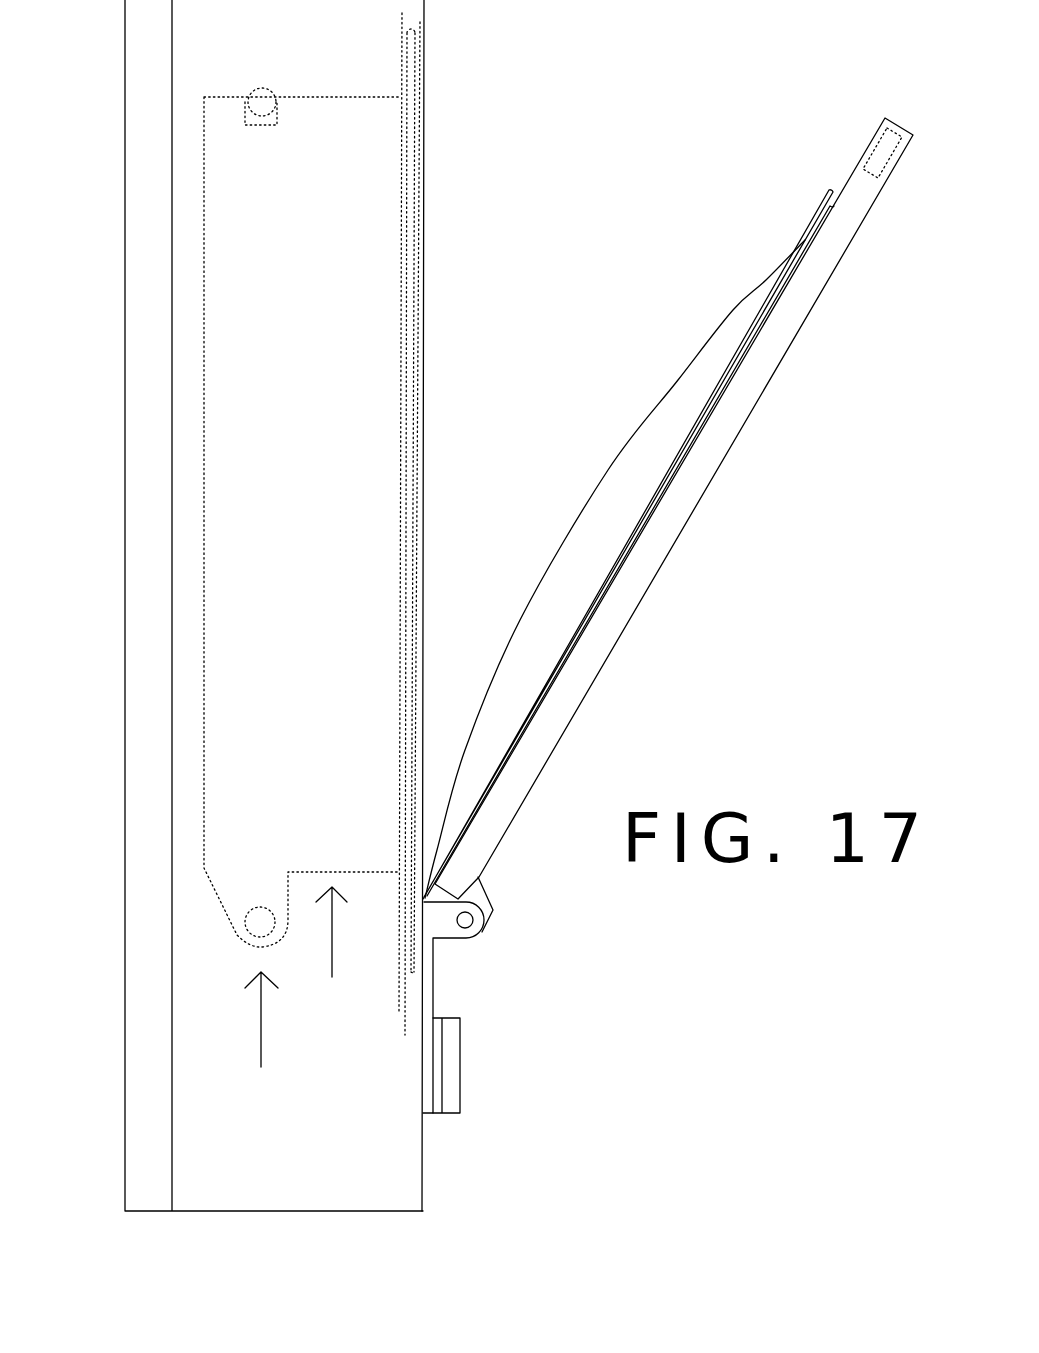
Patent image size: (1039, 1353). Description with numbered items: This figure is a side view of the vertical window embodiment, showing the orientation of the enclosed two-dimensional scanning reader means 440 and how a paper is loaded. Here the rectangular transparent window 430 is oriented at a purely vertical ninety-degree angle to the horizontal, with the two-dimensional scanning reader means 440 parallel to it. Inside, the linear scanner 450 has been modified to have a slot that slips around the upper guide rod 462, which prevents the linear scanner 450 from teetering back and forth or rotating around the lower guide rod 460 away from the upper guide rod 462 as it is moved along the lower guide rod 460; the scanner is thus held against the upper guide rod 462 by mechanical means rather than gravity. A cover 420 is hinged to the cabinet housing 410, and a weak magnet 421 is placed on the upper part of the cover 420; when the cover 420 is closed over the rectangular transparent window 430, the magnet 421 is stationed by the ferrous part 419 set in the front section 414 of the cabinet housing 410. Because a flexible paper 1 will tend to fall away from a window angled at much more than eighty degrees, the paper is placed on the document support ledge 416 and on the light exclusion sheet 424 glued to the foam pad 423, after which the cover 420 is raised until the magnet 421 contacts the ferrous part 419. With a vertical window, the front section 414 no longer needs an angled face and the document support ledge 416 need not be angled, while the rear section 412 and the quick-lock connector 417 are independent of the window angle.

The flexible paper 1 is at (608, 470).
The cabinet housing 410 is at (502, 1190).
The rear section 412 is at (125, 1140).
The front section 414 is at (413, 1154).
The document support ledge 416 is at (442, 932).
The quick-lock connector 417 is at (458, 1063).
The ferrous part 419 is at (424, 43).
The cover 420 is at (667, 553).
The magnet 421 is at (870, 148).
The foam pad 423 is at (813, 228).
The light exclusion sheet 424 is at (832, 191).
The rectangular transparent window 430 is at (305, 580).
The two-dimensional scanning reader means 440 is at (280, 1033).
The linear scanner 450 is at (351, 948).
The lower guide rod 460 is at (258, 907).
The upper guide rod 462 is at (270, 86).